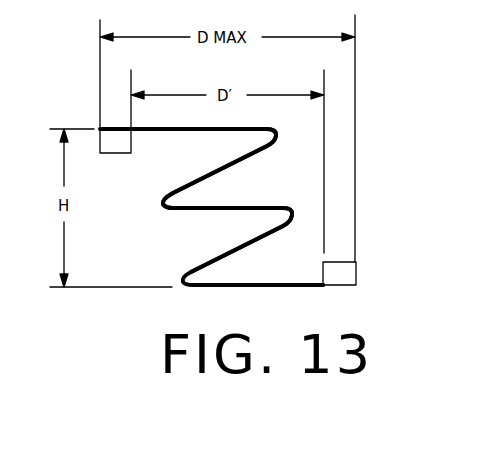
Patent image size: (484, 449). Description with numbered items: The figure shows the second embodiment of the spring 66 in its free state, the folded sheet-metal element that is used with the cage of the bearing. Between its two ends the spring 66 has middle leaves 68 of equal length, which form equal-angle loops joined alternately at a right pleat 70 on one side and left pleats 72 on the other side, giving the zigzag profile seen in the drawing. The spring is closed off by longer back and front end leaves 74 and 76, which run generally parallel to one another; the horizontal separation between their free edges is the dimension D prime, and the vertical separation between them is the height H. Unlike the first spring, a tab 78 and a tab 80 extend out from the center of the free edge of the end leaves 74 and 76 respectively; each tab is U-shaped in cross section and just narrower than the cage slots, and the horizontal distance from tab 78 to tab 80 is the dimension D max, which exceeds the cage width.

The spring 66 is at (153, 264).
The middle leaves 68 is at (243, 238).
The right pleat 70 is at (161, 205).
The left pleats 72 is at (290, 143).
The back end leaf 74 is at (240, 288).
The front end leaf 76 is at (199, 132).
The tab 78 is at (340, 285).
The tab 80 is at (122, 138).